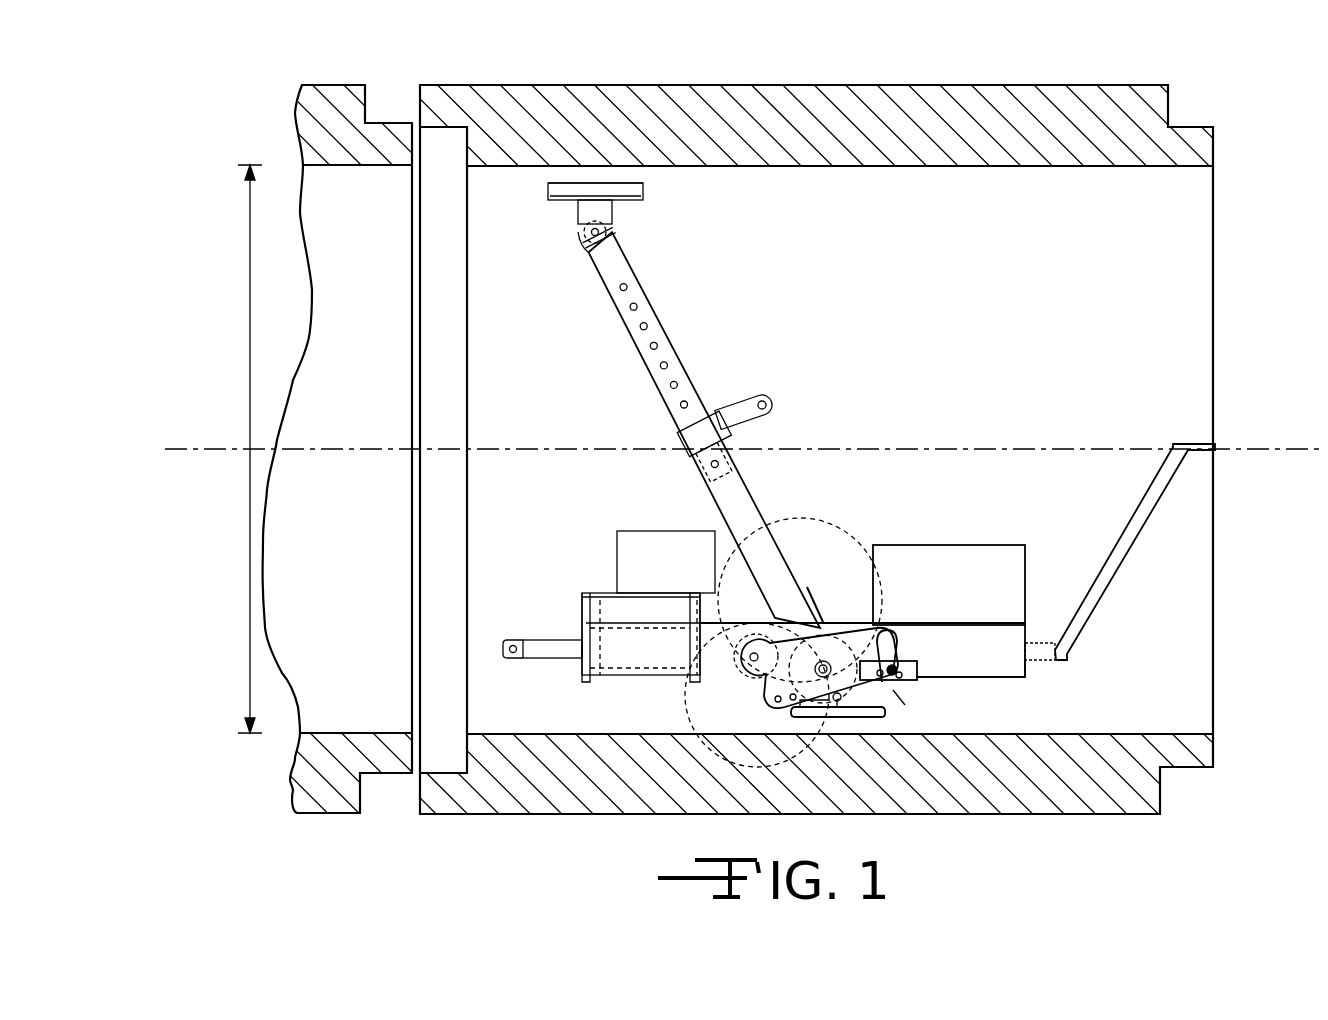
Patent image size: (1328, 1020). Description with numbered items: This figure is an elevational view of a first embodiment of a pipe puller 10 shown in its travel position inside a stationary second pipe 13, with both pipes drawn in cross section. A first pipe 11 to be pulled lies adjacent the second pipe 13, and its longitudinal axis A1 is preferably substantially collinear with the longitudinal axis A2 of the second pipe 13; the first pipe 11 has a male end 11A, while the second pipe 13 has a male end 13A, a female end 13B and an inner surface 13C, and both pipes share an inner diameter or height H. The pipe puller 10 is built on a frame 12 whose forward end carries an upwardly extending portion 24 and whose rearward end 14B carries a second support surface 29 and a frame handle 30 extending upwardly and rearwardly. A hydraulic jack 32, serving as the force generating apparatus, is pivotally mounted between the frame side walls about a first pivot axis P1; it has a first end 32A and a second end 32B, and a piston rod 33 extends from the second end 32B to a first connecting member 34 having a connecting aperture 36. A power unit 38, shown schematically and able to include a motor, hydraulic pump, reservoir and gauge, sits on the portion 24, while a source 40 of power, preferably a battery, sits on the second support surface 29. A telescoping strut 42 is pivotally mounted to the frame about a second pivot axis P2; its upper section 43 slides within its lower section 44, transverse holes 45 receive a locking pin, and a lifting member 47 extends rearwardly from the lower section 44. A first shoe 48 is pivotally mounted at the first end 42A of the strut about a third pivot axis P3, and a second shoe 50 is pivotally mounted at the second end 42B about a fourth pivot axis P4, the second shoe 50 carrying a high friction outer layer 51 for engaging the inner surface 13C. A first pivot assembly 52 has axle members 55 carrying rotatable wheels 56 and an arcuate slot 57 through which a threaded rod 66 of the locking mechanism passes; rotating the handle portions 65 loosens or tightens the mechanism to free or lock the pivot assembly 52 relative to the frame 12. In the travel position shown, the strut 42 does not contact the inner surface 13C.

The pipe puller 10 is at (890, 330).
The first pipe 11 is at (334, 78).
The male end 11A is at (390, 123).
The frame 12 is at (990, 622).
The second pipe 13 is at (949, 80).
The male end 13A is at (1184, 125).
The female end 13B is at (444, 85).
The inner surface 13C is at (1180, 168).
The rearward end 14B is at (1012, 677).
The upwardly extending portion 24 is at (612, 592).
The second support surface 29 is at (1003, 627).
The frame handle 30 is at (1155, 502).
The hydraulic jack 32 is at (630, 660).
The first end 32A is at (780, 525).
The second end 32B is at (580, 628).
The piston rod 33 is at (553, 658).
The first connecting member 34 is at (522, 640).
The connecting aperture 36 is at (513, 655).
The power unit 38 is at (677, 532).
The source of power 40 is at (930, 545).
The strut 42 is at (664, 305).
The first end 42A is at (816, 730).
The second end 42B is at (627, 238).
The upper section 43 is at (645, 290).
The lower section 44 is at (748, 495).
The transverse holes 45 is at (650, 346).
The lifting member 47 is at (777, 393).
The first shoe 48 is at (905, 705).
The second shoe 50 is at (548, 192).
The outer layer 51 is at (645, 188).
The first pivot assembly 52 is at (882, 630).
The axle members 55 is at (753, 675).
The rotatable wheels 56 is at (686, 783).
The arcuate slot 57 is at (897, 662).
The handle portions 65 is at (905, 672).
The threaded rod 66 is at (885, 682).
The inner diameter or height H is at (248, 232).
The longitudinal axis A1 is at (222, 447).
The longitudinal axis A2 is at (1262, 447).
The first pivot axis P1 is at (760, 640).
The second pivot axis P2 is at (826, 660).
The third pivot axis P3 is at (838, 705).
The fourth pivot axis P4 is at (590, 232).